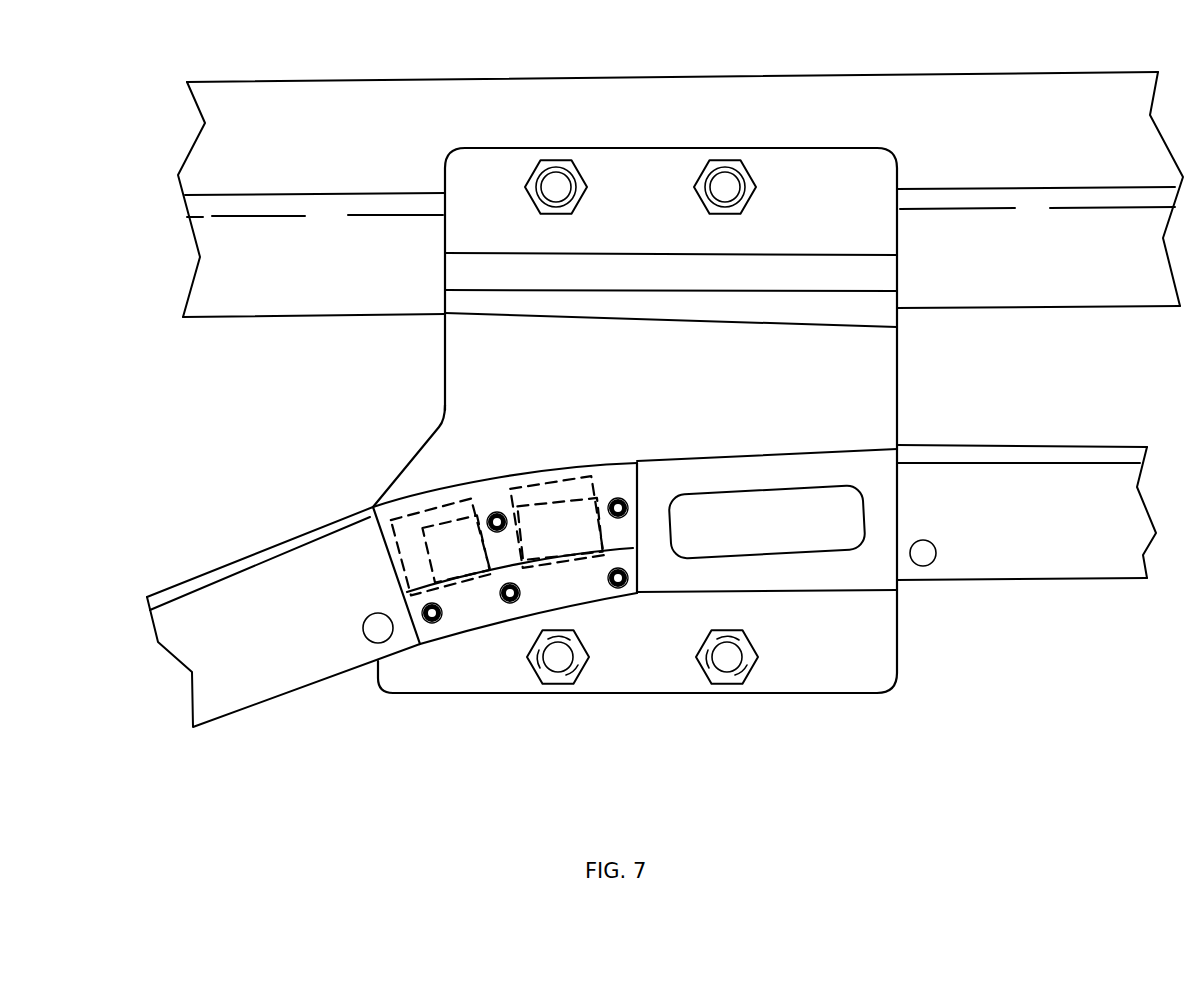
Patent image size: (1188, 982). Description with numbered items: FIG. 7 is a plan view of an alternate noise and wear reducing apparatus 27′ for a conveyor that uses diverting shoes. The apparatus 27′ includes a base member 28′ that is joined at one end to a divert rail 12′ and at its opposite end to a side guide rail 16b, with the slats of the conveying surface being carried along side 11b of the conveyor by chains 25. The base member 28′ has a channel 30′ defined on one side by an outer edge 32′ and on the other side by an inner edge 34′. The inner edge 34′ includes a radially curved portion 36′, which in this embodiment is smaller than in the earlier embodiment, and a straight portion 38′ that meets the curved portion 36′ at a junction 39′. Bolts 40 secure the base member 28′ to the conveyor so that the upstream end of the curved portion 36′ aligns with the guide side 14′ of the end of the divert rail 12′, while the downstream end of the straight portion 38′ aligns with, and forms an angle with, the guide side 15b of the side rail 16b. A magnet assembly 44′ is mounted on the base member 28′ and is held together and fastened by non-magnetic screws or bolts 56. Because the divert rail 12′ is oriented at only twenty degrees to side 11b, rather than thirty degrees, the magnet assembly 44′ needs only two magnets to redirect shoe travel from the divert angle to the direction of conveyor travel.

The side of conveying surface 11b is at (325, 170).
The chain 25 is at (402, 217).
The base member 28′ is at (473, 190).
The channel 30′ is at (507, 378).
The outer edge 32′ is at (733, 330).
The guide side of divert rail 14′ is at (362, 512).
The divert rail 12′ is at (233, 675).
The straight portion 38′ is at (750, 455).
The junction 39′ is at (638, 478).
The magnet assembly 44′ is at (465, 608).
The non-magnetic screws or bolts 56 is at (627, 572).
The curved portion 36′ is at (470, 478).
The inner edge 34′ is at (565, 465).
The guide side of side rail 15b is at (963, 443).
The side guide rail 16b is at (1050, 530).
The bolts 40 is at (552, 693).
The noise and wear reducing apparatus 27′ is at (888, 707).